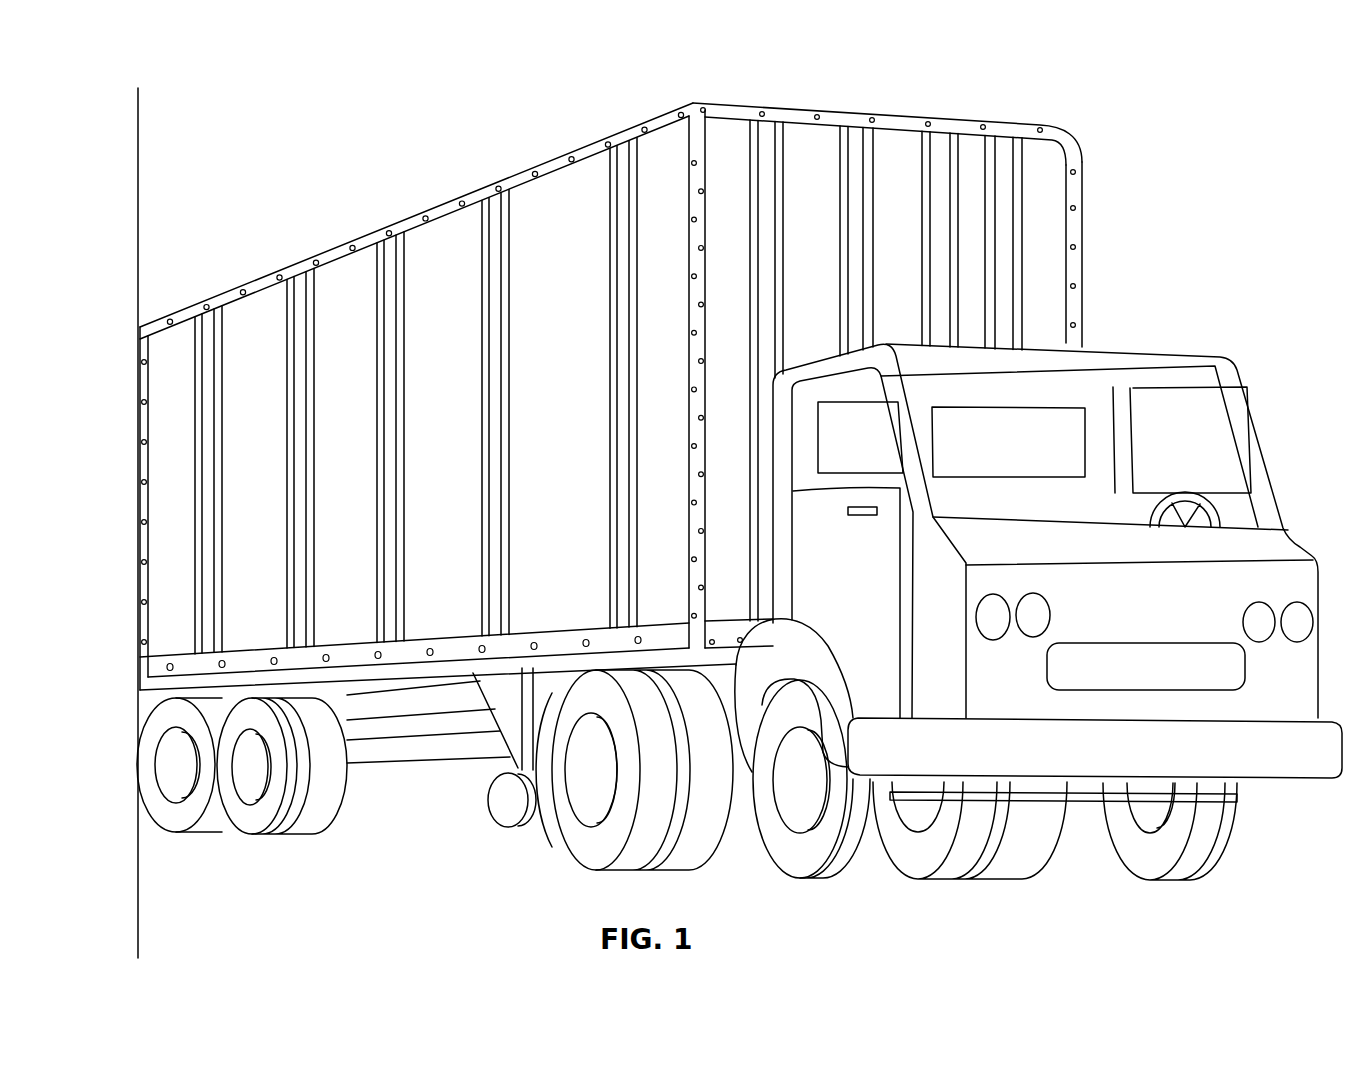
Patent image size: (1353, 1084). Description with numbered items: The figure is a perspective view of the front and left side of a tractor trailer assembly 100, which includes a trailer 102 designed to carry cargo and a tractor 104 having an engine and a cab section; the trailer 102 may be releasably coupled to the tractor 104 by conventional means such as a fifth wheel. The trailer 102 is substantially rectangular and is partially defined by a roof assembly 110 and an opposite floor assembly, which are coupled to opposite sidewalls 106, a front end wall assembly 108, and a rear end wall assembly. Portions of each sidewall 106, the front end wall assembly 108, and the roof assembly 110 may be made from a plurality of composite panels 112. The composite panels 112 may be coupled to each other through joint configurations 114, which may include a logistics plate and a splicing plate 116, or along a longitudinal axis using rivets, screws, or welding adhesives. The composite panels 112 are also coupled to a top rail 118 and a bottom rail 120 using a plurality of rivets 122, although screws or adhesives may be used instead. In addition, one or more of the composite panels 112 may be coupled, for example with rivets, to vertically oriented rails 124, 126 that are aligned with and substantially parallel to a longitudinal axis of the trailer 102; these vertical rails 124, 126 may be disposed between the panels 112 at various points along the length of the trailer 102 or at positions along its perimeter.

The tractor trailer assembly 100 is at (158, 80).
The trailer 102 is at (641, 108).
The tractor 104 is at (1257, 343).
The sidewall 106 is at (542, 357).
The front end wall assembly 108 is at (947, 214).
The roof assembly 110 is at (716, 101).
The composite panel 112 is at (352, 284).
The joint configuration 114 is at (379, 262).
The splicing plate 116 is at (212, 603).
The top rail 118 is at (550, 170).
The bottom rail 120 is at (157, 666).
The rivet 122 is at (205, 305).
The vertically oriented rail 124 is at (142, 372).
The vertically oriented rail 126 is at (1072, 198).